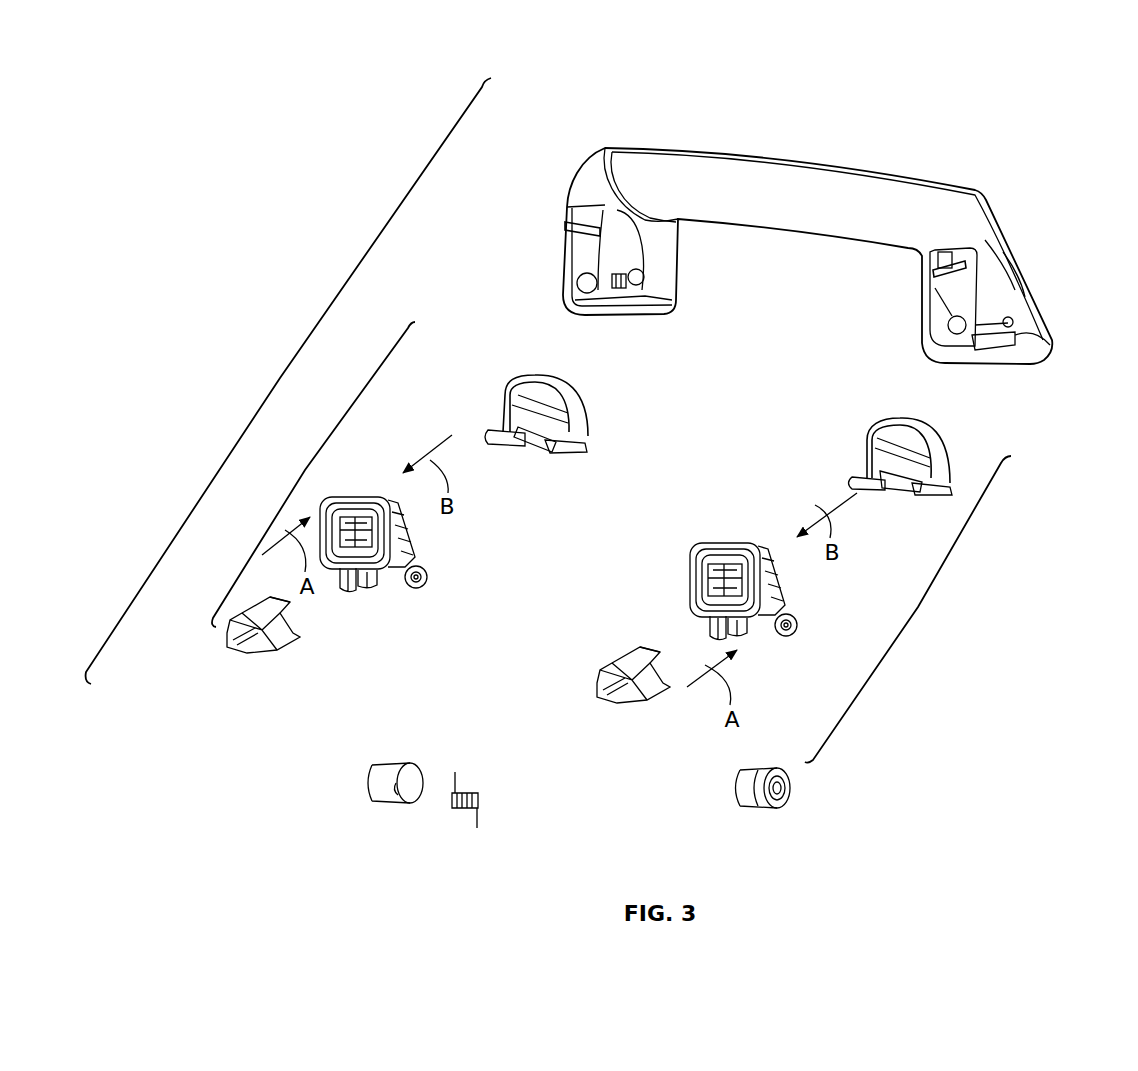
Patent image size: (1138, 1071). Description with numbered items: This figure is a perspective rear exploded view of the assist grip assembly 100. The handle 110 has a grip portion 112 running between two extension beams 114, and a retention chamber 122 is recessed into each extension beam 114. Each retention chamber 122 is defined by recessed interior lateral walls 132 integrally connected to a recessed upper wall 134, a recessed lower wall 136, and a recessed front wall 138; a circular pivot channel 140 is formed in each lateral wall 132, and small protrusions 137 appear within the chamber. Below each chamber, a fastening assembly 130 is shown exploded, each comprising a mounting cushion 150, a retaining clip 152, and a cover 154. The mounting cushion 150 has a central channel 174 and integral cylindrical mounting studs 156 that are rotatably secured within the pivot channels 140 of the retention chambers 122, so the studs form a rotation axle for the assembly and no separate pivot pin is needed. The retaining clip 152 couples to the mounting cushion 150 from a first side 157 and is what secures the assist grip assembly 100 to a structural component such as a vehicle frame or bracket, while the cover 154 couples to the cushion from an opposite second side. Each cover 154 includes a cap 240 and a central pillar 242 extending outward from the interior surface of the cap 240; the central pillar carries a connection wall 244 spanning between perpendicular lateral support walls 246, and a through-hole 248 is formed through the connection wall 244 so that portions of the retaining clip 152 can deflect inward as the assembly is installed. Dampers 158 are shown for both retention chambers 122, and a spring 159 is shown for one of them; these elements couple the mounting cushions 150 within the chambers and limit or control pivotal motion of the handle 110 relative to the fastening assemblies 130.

The assist grip assembly 100 is at (280, 378).
The handle 110 is at (800, 227).
The grip portion 112 is at (890, 187).
The extension beams 114 is at (563, 208).
The retention chambers 122 is at (624, 236).
The fastening assembly 130 is at (305, 470).
The recessed interior lateral walls 132 is at (572, 238).
The recessed upper wall 134 is at (627, 313).
The recessed lower wall 136 is at (585, 207).
The protrusion 137 is at (645, 290).
The recessed front wall 138 is at (633, 250).
The circular pivot channel 140 is at (580, 290).
The mounting cushion 150 is at (420, 540).
The retaining clip 152 is at (261, 653).
The cover 154 is at (600, 428).
The cylindrical mounting studs 156 is at (427, 583).
The first side 157 is at (352, 600).
The dampers 158 is at (393, 805).
The spring 159 is at (432, 549).
The central channel 174 is at (352, 540).
The cap 240 is at (701, 451).
The central pillar 242 is at (520, 452).
The connection wall 244 is at (517, 418).
The lateral support walls 246 is at (484, 434).
The through-hole 248 is at (527, 420).